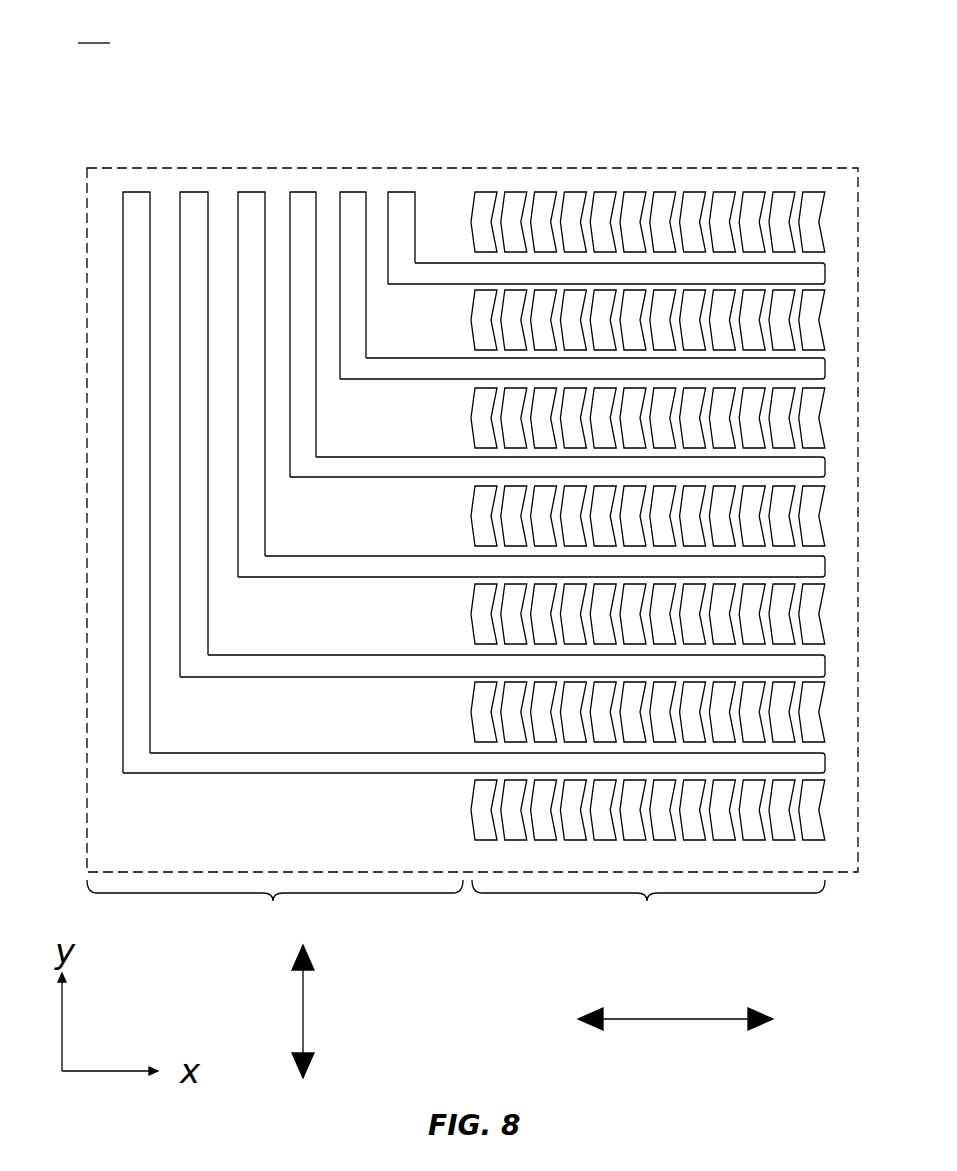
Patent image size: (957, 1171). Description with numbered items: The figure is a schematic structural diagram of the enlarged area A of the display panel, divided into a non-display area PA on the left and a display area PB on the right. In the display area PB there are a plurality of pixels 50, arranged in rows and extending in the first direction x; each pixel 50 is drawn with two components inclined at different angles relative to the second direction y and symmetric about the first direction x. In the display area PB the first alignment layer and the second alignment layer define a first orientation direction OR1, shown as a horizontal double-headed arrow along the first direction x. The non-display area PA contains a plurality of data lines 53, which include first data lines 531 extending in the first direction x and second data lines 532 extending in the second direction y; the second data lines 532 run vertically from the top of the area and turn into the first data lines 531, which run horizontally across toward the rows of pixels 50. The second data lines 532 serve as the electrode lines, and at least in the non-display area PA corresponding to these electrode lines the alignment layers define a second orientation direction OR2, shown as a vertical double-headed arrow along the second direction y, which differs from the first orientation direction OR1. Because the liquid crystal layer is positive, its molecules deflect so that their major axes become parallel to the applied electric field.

The data lines 53 is at (430, 85).
The second data lines 532 is at (250, 203).
The first data lines 531 is at (445, 273).
The pixels 50 is at (700, 205).
The enlarged area A is at (158, 72).
The non-display area PA is at (275, 915).
The display area PB is at (648, 916).
The first orientation direction OR1 is at (673, 1013).
The second orientation direction OR2 is at (303, 1007).